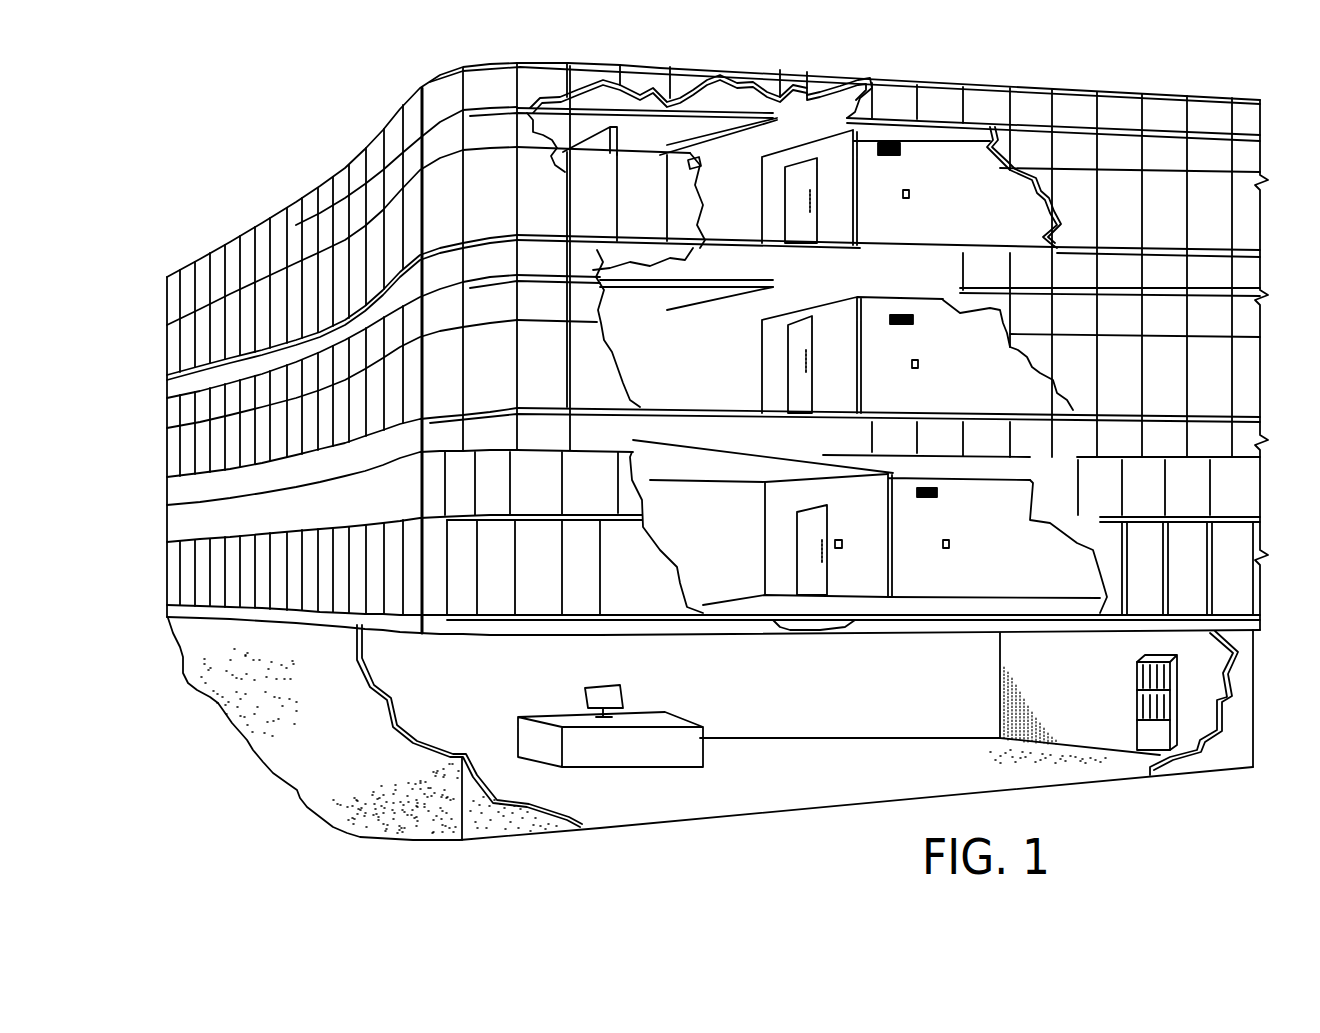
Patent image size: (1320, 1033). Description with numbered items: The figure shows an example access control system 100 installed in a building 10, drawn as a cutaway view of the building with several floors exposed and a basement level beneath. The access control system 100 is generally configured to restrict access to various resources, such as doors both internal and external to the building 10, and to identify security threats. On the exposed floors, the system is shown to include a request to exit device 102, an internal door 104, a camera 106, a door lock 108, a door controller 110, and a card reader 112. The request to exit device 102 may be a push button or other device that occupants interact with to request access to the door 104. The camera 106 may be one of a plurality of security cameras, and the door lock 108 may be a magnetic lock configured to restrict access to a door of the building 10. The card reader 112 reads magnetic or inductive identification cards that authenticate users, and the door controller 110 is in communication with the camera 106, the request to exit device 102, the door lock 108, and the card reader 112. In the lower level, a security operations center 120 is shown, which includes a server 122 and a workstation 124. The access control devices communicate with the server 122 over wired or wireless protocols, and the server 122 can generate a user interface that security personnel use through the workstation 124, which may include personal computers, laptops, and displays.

The access control system 100 is at (392, 94).
The building 10 is at (1204, 96).
The request to exit device 102 is at (920, 191).
The internal door 104 is at (783, 207).
The camera 106 is at (703, 167).
The door lock 108 is at (814, 317).
The door controller 110 is at (893, 326).
The card reader 112 is at (838, 539).
The security operations center 120 is at (842, 694).
The server 122 is at (1133, 686).
The workstation 124 is at (632, 695).